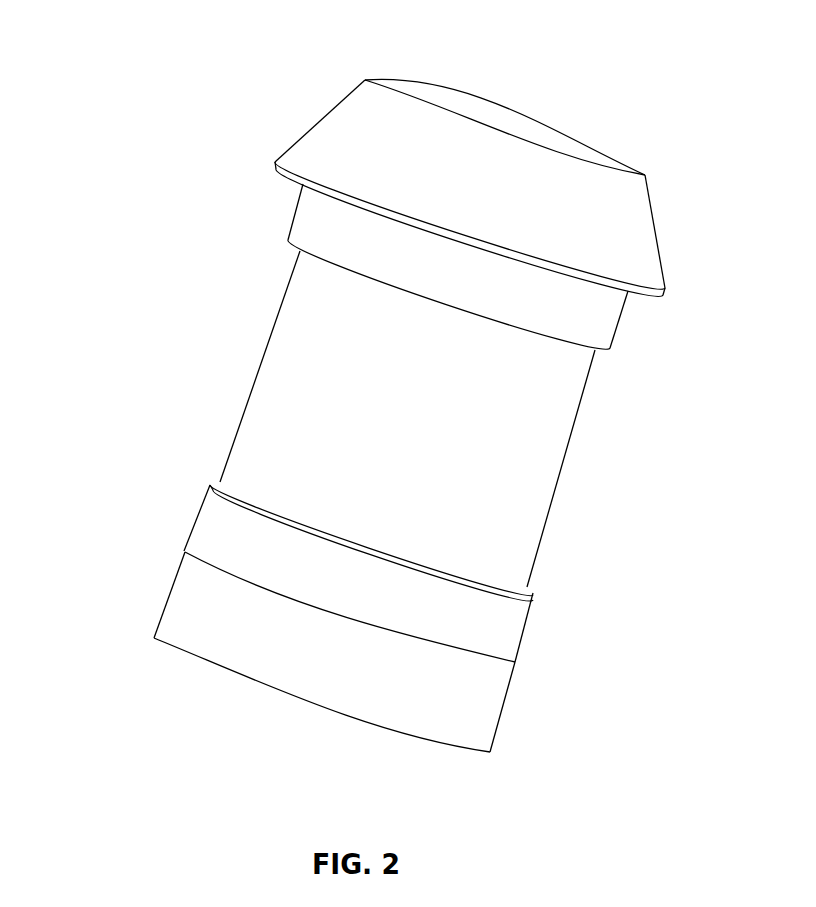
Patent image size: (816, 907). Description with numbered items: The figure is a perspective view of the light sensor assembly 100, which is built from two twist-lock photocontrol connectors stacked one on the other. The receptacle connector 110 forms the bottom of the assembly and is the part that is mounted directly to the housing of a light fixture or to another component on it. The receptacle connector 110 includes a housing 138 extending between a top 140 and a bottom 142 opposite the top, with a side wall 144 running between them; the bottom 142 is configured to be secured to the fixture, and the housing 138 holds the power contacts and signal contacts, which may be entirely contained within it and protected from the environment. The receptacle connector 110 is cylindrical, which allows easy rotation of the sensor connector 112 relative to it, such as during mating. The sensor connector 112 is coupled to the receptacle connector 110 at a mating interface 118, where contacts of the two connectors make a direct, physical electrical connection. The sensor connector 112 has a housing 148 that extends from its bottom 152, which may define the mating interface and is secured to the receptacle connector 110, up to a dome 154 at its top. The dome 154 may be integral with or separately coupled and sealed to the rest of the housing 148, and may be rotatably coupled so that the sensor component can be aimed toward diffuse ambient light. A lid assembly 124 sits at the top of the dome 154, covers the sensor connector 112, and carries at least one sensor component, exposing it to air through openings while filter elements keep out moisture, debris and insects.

The light sensor assembly 100 is at (635, 85).
The sensor connector 112 is at (202, 152).
The lid assembly 124 is at (328, 112).
The receptacle connector 110 is at (147, 612).
The housing 148 is at (250, 385).
The dome 154 is at (558, 435).
The mating interface 118 is at (520, 663).
The side wall 144 is at (483, 707).
The bottom 152 is at (273, 592).
The housing 138 is at (293, 660).
The bottom 142 is at (335, 713).
The top 140 is at (370, 625).